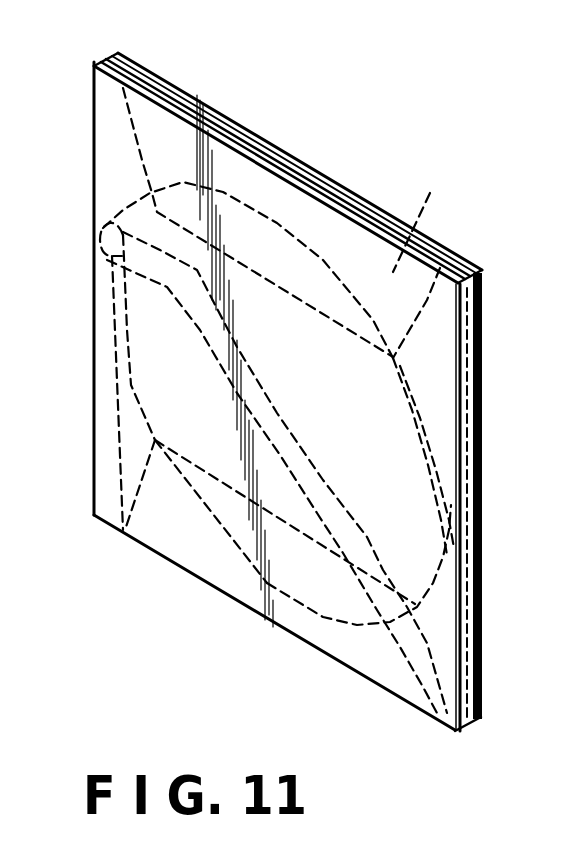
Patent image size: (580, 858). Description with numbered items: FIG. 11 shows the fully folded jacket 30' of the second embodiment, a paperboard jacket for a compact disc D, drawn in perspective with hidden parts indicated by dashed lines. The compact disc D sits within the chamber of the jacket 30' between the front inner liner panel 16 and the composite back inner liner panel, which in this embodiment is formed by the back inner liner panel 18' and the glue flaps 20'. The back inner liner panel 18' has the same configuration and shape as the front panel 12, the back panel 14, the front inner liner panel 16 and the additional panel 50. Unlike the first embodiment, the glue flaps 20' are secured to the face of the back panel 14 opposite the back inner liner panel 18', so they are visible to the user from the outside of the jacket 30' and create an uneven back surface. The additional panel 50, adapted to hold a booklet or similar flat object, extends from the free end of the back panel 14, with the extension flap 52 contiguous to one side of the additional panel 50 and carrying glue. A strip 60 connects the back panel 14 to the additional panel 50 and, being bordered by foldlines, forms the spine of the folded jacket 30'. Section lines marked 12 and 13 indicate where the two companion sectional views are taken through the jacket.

The back panel 14 is at (152, 68).
The front inner liner panel 16 is at (390, 222).
The back inner liner panel 18' is at (226, 332).
The glue flaps 20' is at (290, 400).
The fully folded jacket 30' is at (294, 136).
The additional panel 50 is at (436, 238).
The extension flap 52 is at (455, 262).
The strip 60 is at (477, 618).
The compact disc D is at (480, 353).
The front panel 12 is at (273, 78).
The section line 13- 13 is at (62, 265).